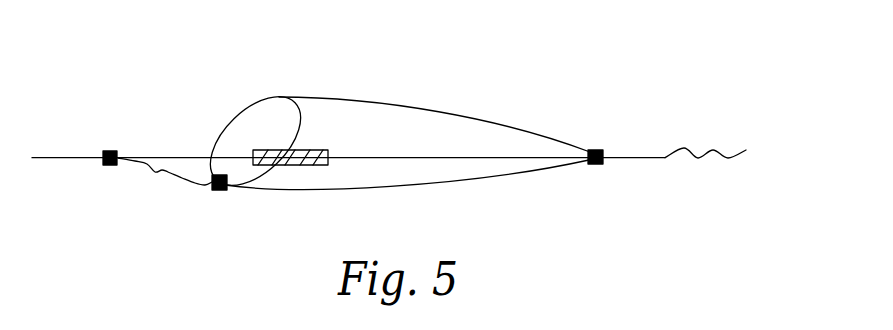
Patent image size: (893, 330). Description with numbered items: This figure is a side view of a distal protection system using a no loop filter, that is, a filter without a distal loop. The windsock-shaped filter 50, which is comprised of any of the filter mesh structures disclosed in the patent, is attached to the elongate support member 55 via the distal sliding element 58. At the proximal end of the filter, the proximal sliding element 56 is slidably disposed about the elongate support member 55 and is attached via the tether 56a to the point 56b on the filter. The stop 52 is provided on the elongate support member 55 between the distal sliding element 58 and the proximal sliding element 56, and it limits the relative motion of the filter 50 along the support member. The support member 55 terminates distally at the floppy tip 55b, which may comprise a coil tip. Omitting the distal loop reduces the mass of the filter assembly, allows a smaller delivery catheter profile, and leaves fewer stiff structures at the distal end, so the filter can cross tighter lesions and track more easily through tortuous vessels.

The windsock-shaped filter 50 is at (397, 105).
The stop 52 is at (270, 148).
The elongate support member 55 is at (80, 157).
The floppy tip 55b is at (717, 148).
The proximal sliding element 56 is at (108, 166).
The tether 56a is at (180, 178).
The point on the filter 56b is at (220, 189).
The distal sliding element 58 is at (595, 165).